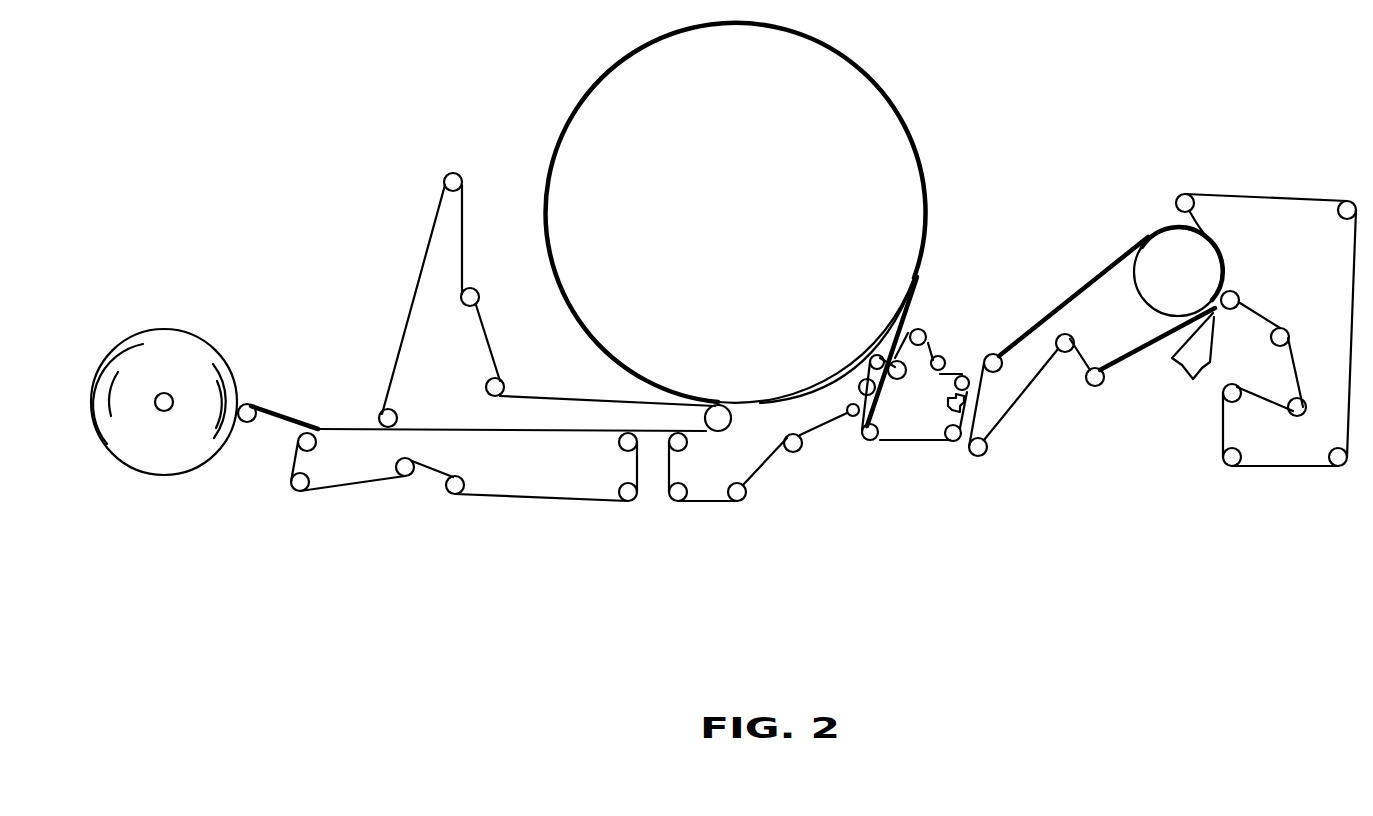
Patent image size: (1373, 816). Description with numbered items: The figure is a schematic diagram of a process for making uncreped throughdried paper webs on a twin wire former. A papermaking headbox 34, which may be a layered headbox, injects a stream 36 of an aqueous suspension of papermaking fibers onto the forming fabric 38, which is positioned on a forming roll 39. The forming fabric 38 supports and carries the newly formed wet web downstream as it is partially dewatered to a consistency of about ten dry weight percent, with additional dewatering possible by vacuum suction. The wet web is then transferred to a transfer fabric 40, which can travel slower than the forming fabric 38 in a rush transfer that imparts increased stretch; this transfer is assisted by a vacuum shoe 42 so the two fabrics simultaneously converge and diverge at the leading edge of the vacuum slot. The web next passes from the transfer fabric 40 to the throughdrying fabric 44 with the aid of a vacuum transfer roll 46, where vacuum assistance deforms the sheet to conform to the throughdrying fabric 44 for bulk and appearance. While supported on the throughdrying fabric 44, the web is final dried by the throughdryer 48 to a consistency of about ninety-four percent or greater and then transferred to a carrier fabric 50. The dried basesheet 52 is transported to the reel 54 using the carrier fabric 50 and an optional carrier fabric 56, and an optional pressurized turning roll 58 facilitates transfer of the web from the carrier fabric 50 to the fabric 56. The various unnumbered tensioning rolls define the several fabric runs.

The papermaking headbox 34 is at (1197, 382).
The stream 36 is at (1224, 298).
The forming fabric 38 is at (1133, 364).
The forming roll 39 is at (1198, 289).
The transfer fabric 40 is at (960, 375).
The vacuum shoe 42 is at (946, 400).
The throughdrying fabric 44 is at (833, 424).
The vacuum transfer roll 46 is at (850, 387).
The throughdryer 48 is at (760, 229).
The carrier fabric 50 is at (413, 286).
The dried basesheet 52 is at (647, 431).
The reel 54 is at (170, 412).
The optional carrier fabric 56 is at (347, 481).
The pressurized turning roll 58 is at (398, 412).